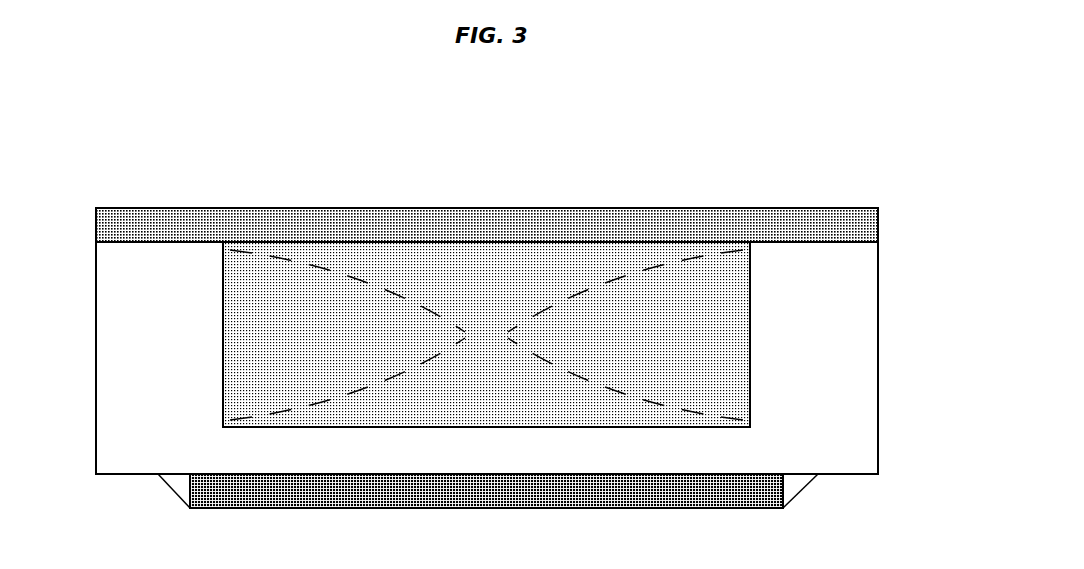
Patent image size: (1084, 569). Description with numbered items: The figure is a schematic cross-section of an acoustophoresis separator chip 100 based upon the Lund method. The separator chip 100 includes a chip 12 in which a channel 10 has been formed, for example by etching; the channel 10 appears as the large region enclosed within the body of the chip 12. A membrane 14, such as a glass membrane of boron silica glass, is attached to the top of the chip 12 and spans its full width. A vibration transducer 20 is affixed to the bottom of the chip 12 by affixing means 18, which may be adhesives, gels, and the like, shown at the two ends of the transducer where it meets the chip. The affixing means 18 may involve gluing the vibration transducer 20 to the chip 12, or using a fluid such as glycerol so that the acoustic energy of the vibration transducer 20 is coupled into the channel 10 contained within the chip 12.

The separator chip 100 is at (800, 172).
The channel 10 is at (533, 275).
The chip 12 is at (878, 347).
The membrane 14 is at (878, 222).
The affixing means 18 is at (173, 493).
The vibration transducer 20 is at (478, 508).